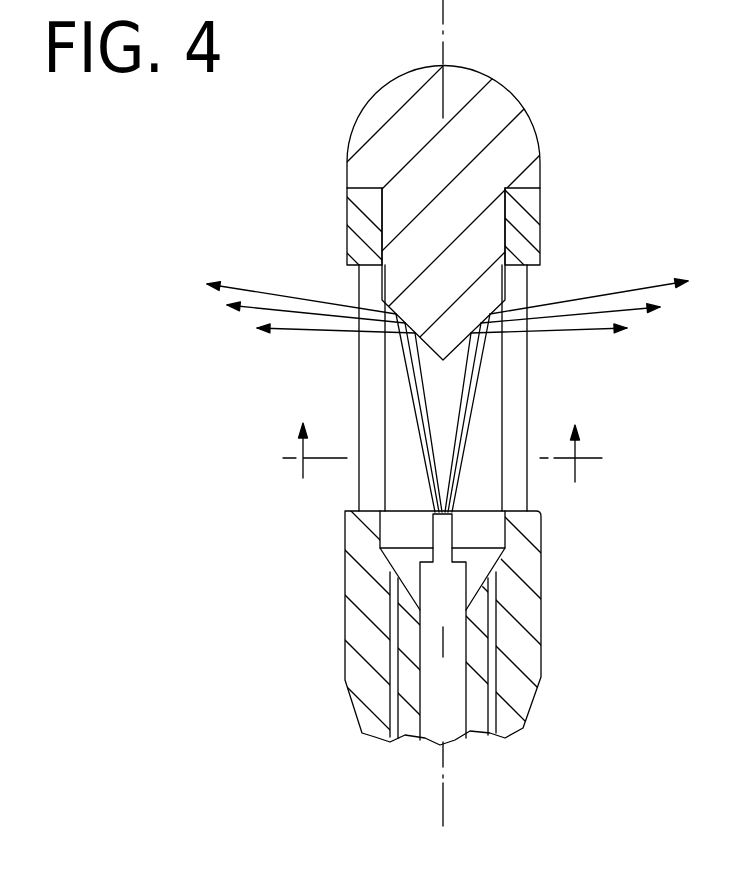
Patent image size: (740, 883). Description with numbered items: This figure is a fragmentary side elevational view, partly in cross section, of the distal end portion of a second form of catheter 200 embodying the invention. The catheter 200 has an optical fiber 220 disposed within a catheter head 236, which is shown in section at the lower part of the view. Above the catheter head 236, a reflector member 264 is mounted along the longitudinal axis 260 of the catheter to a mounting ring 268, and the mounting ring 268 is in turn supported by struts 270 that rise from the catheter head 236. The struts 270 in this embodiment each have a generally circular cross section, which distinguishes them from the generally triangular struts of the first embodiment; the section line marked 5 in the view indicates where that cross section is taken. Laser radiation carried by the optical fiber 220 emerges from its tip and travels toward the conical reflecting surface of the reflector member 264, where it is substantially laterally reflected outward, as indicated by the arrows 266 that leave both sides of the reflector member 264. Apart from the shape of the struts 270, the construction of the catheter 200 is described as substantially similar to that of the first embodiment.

The catheter 200 is at (252, 513).
The reflector member 264 is at (541, 150).
The mounting ring 268 is at (527, 224).
The struts 270 is at (372, 403).
The arrows 266 is at (575, 335).
The catheter head 236 is at (338, 553).
The optical fiber 220 is at (470, 572).
The longitudinal axis 260 is at (444, 785).
The section line for FIG. 5 is at (440, 462).